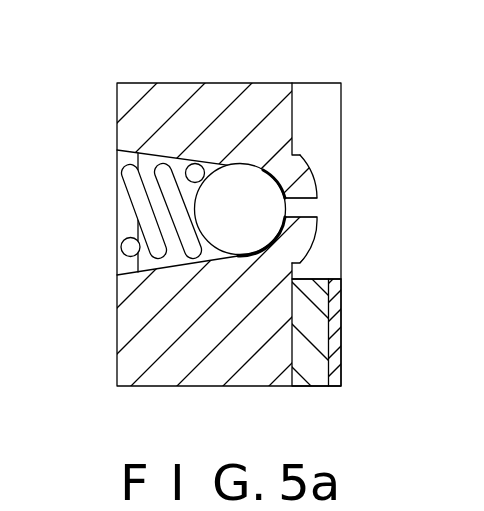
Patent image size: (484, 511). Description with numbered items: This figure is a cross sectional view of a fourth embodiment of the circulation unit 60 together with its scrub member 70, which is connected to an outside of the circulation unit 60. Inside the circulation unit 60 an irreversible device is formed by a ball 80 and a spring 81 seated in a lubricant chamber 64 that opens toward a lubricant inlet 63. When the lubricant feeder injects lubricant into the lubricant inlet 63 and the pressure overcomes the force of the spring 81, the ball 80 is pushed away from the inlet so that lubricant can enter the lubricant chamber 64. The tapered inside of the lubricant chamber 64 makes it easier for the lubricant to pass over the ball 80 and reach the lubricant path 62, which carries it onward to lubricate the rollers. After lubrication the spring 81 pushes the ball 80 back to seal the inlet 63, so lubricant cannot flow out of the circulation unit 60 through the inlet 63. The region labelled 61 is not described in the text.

The circulation unit 60 is at (182, 83).
The ball socket 61 is at (310, 168).
The lubricant path 62 is at (130, 158).
The lubricant inlet 63 is at (313, 213).
The lubricant chamber 64 is at (138, 267).
The scrub member 70 is at (341, 278).
The ball 80 is at (232, 241).
The spring 81 is at (142, 198).